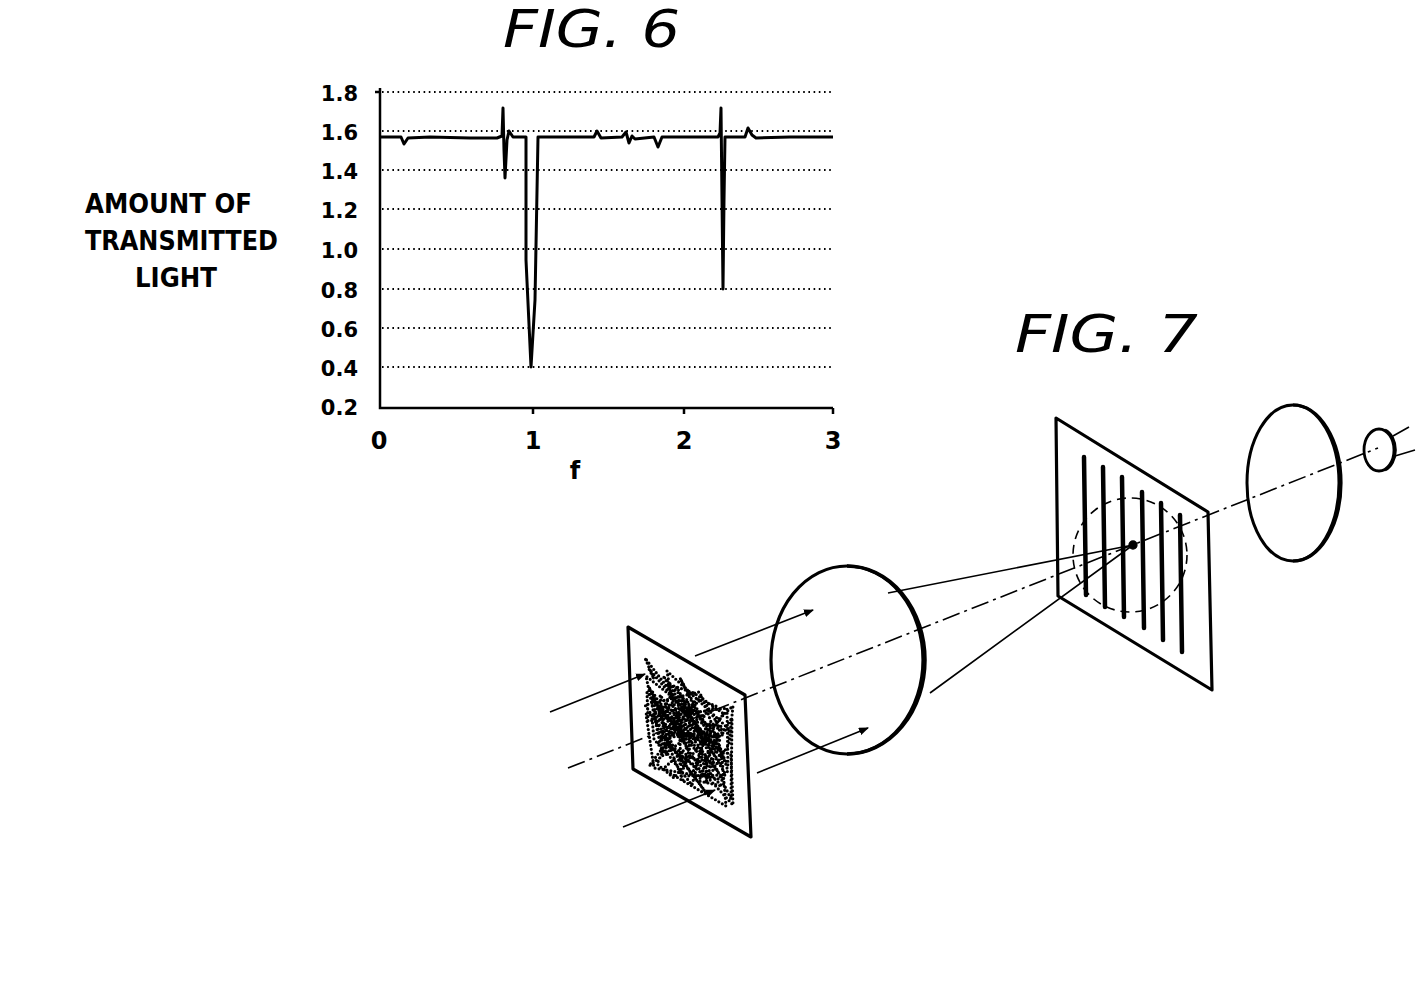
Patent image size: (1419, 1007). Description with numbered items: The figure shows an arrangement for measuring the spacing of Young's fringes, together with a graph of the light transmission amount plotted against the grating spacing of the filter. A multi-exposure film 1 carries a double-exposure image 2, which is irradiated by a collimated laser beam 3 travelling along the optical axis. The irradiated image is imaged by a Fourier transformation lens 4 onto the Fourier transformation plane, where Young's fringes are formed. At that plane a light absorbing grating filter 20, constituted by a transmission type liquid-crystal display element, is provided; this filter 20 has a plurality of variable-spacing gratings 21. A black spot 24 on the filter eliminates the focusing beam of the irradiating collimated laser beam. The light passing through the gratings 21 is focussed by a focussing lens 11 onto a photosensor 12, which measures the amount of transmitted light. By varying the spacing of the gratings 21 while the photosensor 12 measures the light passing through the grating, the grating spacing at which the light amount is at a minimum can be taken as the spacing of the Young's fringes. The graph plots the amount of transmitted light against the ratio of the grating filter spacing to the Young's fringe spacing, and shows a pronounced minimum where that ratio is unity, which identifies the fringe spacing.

The multi-exposure film 1 is at (645, 630).
The double-exposure image 2 is at (730, 777).
The collimated laser beam 3 is at (575, 773).
The Fourier transformation lens 4 is at (917, 720).
The light absorbing grating filter 20 is at (1088, 617).
The variable-spacing gratings 21 is at (1083, 480).
The black spot 24 is at (1133, 543).
The focussing lens 11 is at (1322, 560).
The photosensor 12 is at (1378, 427).